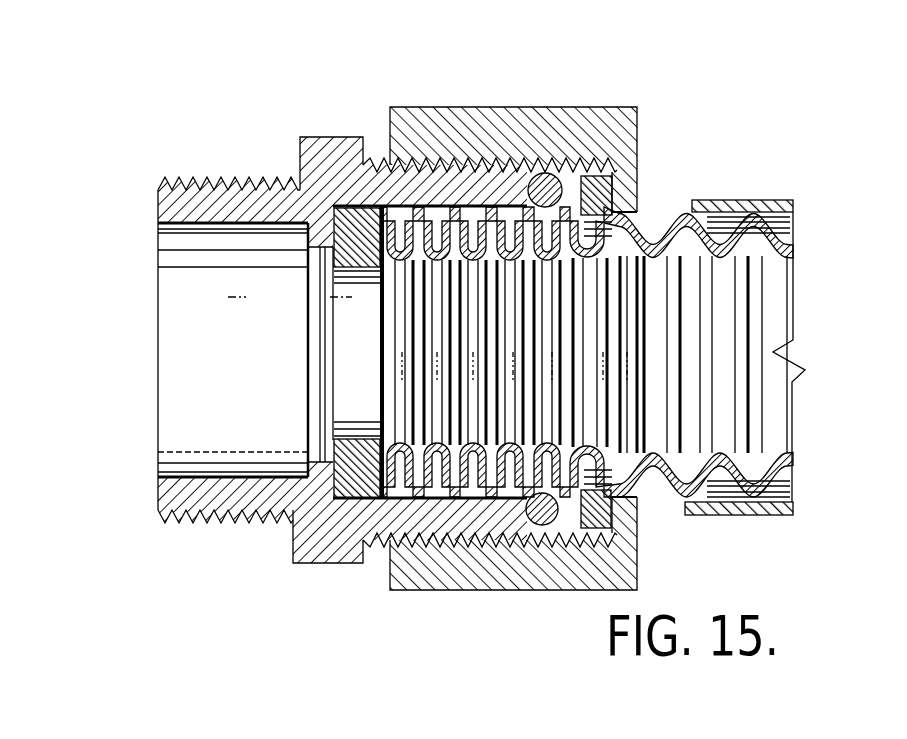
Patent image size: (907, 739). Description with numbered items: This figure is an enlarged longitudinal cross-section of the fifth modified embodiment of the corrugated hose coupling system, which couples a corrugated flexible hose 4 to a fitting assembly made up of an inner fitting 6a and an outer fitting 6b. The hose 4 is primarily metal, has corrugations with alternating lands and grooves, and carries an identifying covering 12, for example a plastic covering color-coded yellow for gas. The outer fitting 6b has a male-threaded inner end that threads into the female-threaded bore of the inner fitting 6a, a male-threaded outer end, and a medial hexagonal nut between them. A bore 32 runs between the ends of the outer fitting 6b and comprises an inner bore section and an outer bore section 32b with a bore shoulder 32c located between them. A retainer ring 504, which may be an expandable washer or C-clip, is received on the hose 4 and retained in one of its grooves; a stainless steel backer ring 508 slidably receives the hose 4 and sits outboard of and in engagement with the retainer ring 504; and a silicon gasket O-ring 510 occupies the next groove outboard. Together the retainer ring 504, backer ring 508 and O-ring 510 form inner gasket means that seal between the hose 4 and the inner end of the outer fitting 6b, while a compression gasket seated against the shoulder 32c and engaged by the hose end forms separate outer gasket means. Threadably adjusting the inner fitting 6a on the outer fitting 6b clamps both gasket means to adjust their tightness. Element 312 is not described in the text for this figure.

The inner fitting 6a is at (638, 107).
The outer fitting 6b is at (157, 512).
The identifying covering 12 is at (793, 200).
The bore 32 is at (185, 476).
The outer bore section 32b is at (217, 329).
The bore shoulder 32c is at (310, 316).
The sealing ring 312 is at (349, 428).
The flexible hose 4 is at (795, 466).
The retainer ring 504 is at (633, 527).
The backer ring 508 is at (586, 535).
The O-ring 510 is at (537, 545).